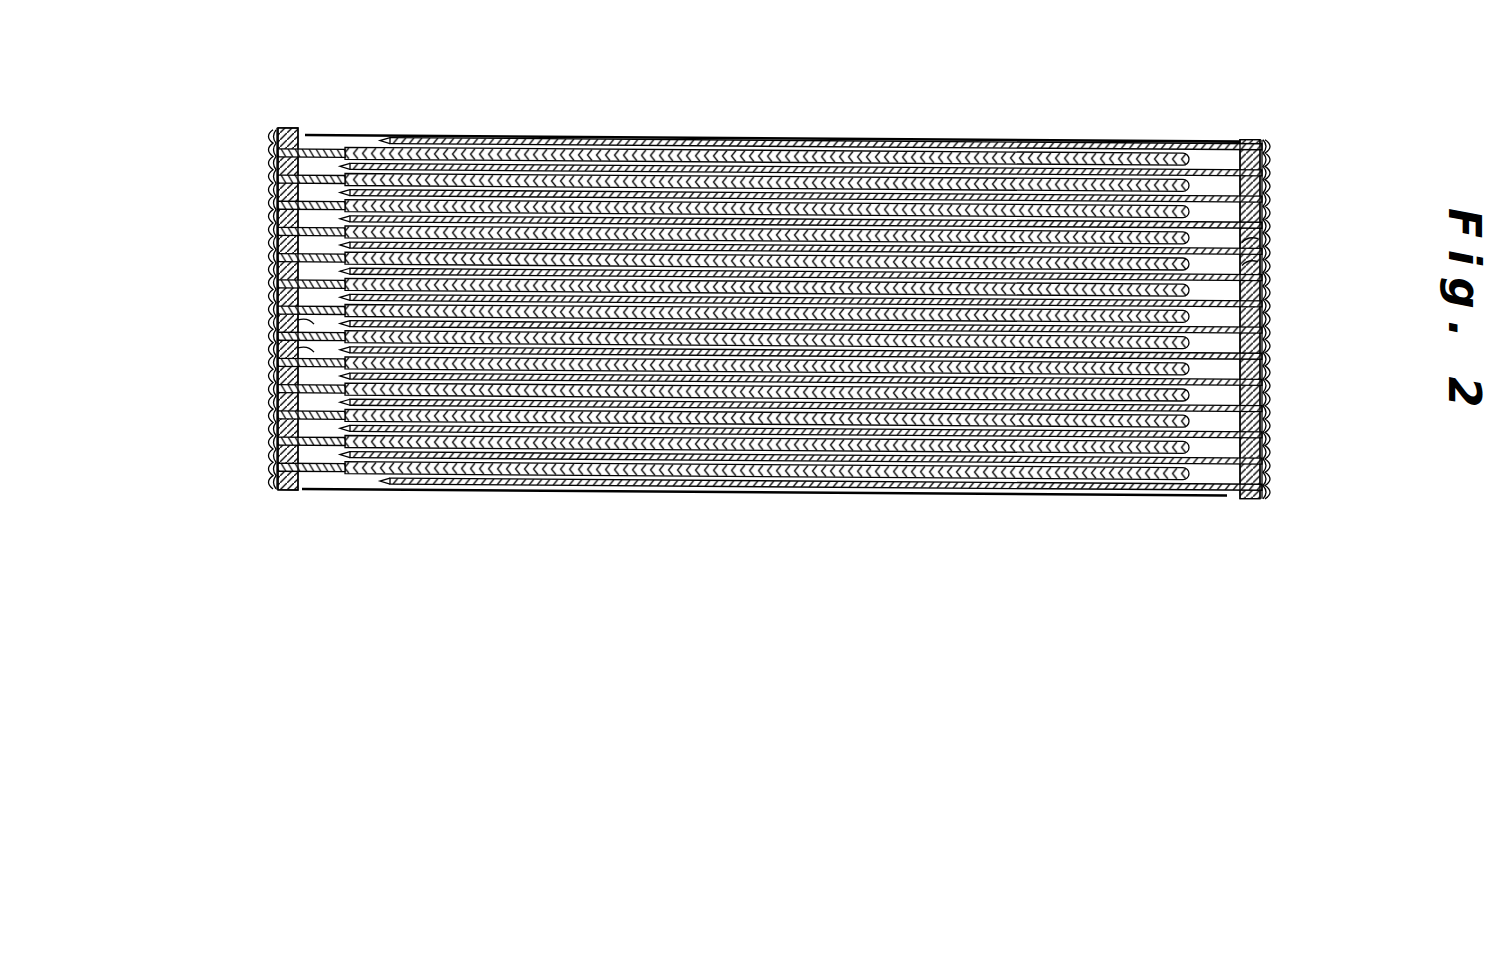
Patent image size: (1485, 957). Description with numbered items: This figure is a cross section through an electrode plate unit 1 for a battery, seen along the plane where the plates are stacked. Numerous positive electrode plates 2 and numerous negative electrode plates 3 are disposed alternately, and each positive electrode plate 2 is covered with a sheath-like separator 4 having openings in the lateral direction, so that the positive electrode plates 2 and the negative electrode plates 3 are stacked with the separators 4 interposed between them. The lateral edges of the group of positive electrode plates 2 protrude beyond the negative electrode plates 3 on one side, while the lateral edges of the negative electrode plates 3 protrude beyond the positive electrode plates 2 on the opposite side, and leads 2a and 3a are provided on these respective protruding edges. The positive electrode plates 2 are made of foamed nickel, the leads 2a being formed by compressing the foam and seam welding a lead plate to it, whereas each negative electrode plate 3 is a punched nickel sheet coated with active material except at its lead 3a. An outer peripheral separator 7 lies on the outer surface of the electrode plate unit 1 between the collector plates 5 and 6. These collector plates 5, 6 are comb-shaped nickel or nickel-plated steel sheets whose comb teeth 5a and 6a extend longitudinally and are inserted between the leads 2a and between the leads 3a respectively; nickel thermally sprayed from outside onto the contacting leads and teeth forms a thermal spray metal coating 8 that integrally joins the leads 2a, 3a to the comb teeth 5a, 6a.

The electrode plate unit 1 is at (1100, 111).
The positive electrode plate 2 is at (565, 468).
The lead 2a is at (300, 352).
The negative electrode plate 3 is at (877, 490).
The lead 3a is at (1268, 262).
The separator 4 is at (793, 203).
The collector plate 5 is at (266, 500).
The comb teeth 5a is at (282, 493).
The collector plate 6 is at (1260, 505).
The comb teeth 6a is at (1245, 503).
The outer peripheral separator 7 is at (693, 135).
The thermal spray metal coating 8 is at (257, 400).